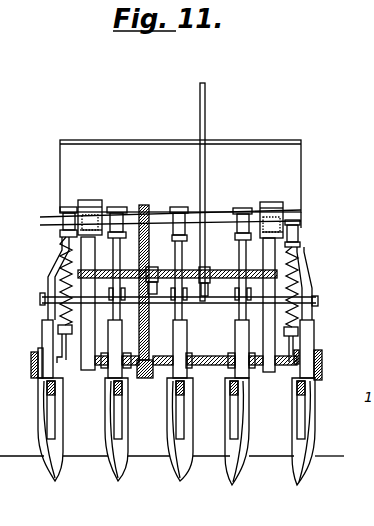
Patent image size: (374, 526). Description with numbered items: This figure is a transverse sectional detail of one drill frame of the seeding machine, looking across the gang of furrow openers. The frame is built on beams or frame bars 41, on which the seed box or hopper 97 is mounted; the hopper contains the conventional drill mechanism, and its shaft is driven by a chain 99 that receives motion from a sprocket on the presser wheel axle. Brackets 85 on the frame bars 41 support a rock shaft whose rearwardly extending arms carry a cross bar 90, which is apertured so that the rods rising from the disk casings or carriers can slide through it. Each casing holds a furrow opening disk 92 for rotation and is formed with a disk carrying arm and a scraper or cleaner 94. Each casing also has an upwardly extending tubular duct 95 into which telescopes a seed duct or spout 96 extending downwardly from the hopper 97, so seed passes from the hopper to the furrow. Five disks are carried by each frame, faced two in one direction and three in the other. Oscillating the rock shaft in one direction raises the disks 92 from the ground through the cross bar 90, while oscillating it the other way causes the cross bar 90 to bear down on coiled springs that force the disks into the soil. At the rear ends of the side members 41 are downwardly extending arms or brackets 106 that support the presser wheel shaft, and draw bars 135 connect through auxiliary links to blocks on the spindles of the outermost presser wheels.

The frame bars 41 is at (61, 220).
The brackets 85 is at (64, 247).
The cross bar 90 is at (220, 304).
The furrow opening disks 92 is at (118, 470).
The scraper or cleaner 94 is at (168, 453).
The tubular duct 95 is at (44, 333).
The seed duct or spout 96 is at (50, 279).
The seed box or hopper 97 is at (199, 186).
The chain 99 is at (143, 263).
The arms or brackets 106 is at (88, 365).
The draw bars 135 is at (322, 364).